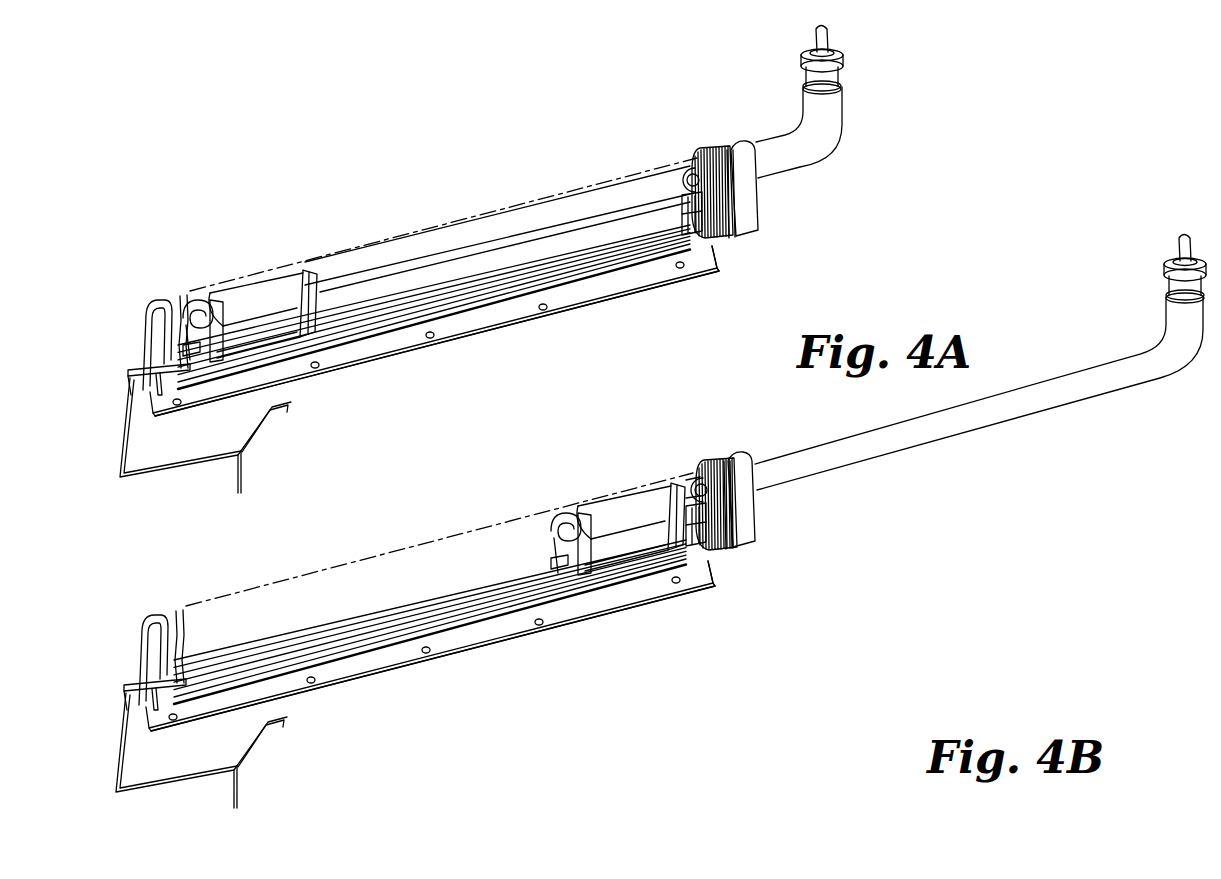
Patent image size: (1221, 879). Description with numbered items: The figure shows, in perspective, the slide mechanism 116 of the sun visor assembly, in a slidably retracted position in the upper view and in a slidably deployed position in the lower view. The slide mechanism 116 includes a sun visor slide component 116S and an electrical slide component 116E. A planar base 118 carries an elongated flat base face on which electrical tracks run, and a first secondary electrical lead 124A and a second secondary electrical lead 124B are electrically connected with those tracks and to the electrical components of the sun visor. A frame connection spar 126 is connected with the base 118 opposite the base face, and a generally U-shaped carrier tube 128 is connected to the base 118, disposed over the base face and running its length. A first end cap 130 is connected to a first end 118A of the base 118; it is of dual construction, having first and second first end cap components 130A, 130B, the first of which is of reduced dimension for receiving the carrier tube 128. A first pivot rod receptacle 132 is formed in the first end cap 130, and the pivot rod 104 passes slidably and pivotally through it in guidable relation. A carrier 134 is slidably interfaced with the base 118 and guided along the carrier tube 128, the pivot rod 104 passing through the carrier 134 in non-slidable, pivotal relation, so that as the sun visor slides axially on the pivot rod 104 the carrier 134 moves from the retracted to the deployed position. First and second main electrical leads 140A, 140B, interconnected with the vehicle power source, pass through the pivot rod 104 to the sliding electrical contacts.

In FIG. 4A, the pivot rod 104 is at (776, 105).
In FIG. 4B, the pivot rod 104 is at (978, 362).
In FIG. 4A, the slide mechanism 116 is at (425, 222).
In FIG. 4B, the slide mechanism 116 is at (510, 503).
In FIG. 4A, the sun visor slide component 116S is at (247, 270).
In FIG. 4B, the sun visor slide component 116S is at (700, 464).
In FIG. 4A, the electrical slide component 116E is at (195, 375).
In FIG. 4B, the electrical slide component 116E is at (560, 586).
In FIG. 4A, the planar base 118 is at (345, 348).
In FIG. 4B, the planar base 118 is at (332, 667).
In FIG. 4A, the first end of the base 118A is at (713, 252).
In FIG. 4B, the first end of the base 118A is at (710, 565).
In FIG. 4A, the first secondary electrical lead 124A is at (133, 420).
In FIG. 4B, the first secondary electrical lead 124A is at (137, 741).
In FIG. 4A, the second secondary electrical lead 124B is at (130, 390).
In FIG. 4B, the second secondary electrical lead 124B is at (125, 710).
In FIG. 4A, the frame connection spar 126 is at (490, 343).
In FIG. 4B, the frame connection spar 126 is at (420, 660).
In FIG. 4A, the carrier tube 128 is at (160, 299).
In FIG. 4B, the carrier tube 128 is at (170, 613).
In FIG. 4A, the first end cap 130 is at (795, 221).
In FIG. 4B, the first end cap 130 is at (775, 538).
In FIG. 4A, the first first end cap component 130A is at (731, 235).
In FIG. 4B, the first first end cap component 130A is at (726, 552).
In FIG. 4A, the second first end cap component 130B is at (753, 226).
In FIG. 4B, the second first end cap component 130B is at (747, 538).
In FIG. 4A, the first pivot rod receptacle 132 is at (690, 176).
In FIG. 4B, the first pivot rod receptacle 132 is at (697, 488).
In FIG. 4B, the carrier 134 is at (548, 552).
In FIG. 4A, the first main electrical lead 140A is at (900, 60).
In FIG. 4B, the first main electrical lead 140A is at (1102, 268).
In FIG. 4A, the second main electrical lead 140B is at (826, 40).
In FIG. 4B, the second main electrical lead 140B is at (1174, 247).